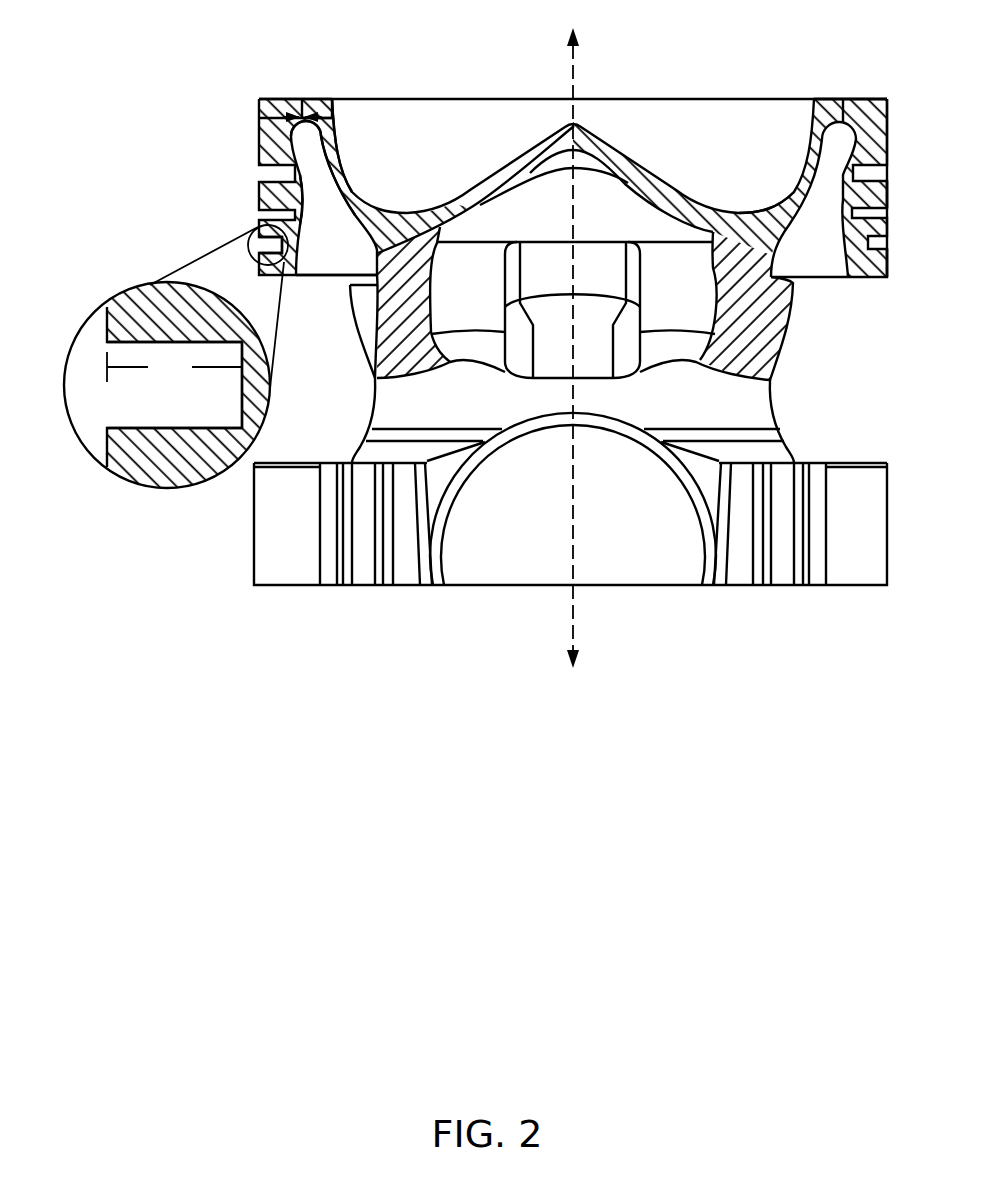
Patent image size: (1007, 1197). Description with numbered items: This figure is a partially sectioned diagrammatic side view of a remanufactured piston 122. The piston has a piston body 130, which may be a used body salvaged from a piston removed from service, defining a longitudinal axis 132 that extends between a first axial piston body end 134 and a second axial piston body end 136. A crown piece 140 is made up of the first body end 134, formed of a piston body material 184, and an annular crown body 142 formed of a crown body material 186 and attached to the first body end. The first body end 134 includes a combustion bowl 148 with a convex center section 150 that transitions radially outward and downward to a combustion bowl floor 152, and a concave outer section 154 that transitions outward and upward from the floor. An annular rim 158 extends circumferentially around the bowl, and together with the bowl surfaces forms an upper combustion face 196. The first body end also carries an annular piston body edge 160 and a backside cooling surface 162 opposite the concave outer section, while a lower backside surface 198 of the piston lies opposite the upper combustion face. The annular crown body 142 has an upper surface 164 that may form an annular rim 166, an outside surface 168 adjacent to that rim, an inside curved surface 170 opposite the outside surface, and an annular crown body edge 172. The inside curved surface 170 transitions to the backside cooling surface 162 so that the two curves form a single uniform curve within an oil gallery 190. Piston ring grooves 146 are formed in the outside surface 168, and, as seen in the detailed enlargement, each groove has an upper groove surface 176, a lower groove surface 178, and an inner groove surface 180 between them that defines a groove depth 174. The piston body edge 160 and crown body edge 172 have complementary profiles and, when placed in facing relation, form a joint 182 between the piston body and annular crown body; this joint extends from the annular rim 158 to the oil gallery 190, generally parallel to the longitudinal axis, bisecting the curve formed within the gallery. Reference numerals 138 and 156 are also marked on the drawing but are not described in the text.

The remanufactured piston 122 is at (486, 337).
The piston body 130 is at (258, 532).
The longitudinal axis 132 is at (573, 622).
The first axial piston body end 134 is at (807, 44).
The second axial piston body end 136 is at (760, 602).
The skirt wall 138 is at (776, 400).
The crown piece 140 is at (888, 114).
The annular crown body 142 is at (258, 117).
The piston ring grooves 146 is at (257, 173).
The combustion bowl 148 is at (440, 126).
The convex center section 150 is at (590, 127).
The combustion bowl floor 152 is at (727, 212).
The concave outer section 154 is at (810, 145).
The bowl rim 156 is at (336, 96).
The annular rim 158 is at (830, 98).
The annular piston body edge 160 is at (308, 121).
The backside cooling surface 162 is at (324, 167).
The upper surface 164 is at (858, 98).
The annular rim 166 is at (872, 98).
The outside surface 168 is at (888, 148).
The inside curved surface 170 is at (310, 252).
The annular crown body edge 172 is at (265, 120).
The groove depth 174 is at (174, 367).
The upper groove surface 176 is at (107, 332).
The lower groove surface 178 is at (107, 433).
The inner groove surface 180 is at (242, 412).
The joint 182 is at (302, 96).
The piston body material 184 is at (768, 310).
The crown body material 186 is at (868, 254).
The oil gallery 190 is at (833, 150).
The upper combustion face 196 is at (316, 98).
The lower backside surface 198 is at (328, 148).